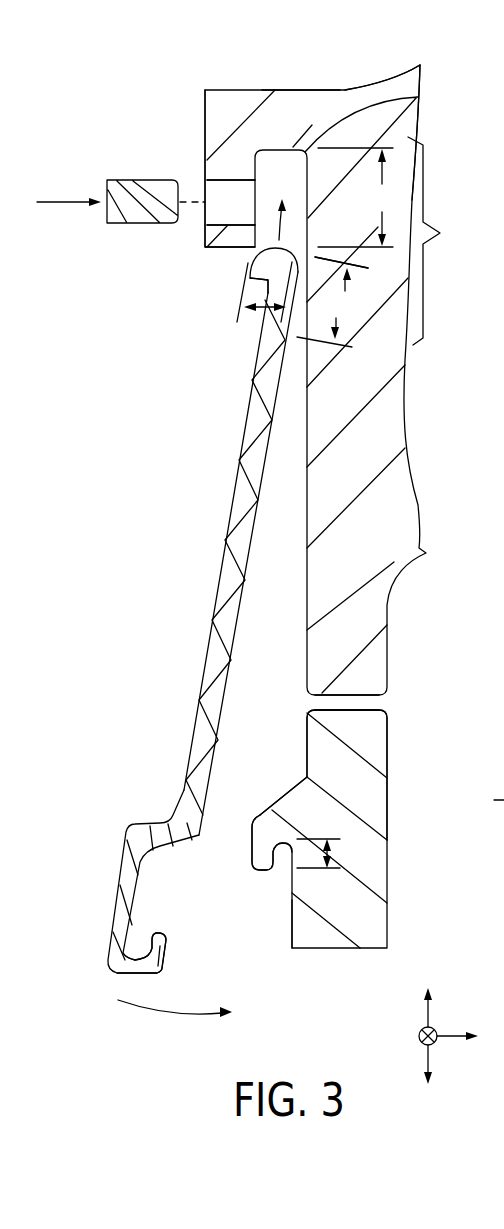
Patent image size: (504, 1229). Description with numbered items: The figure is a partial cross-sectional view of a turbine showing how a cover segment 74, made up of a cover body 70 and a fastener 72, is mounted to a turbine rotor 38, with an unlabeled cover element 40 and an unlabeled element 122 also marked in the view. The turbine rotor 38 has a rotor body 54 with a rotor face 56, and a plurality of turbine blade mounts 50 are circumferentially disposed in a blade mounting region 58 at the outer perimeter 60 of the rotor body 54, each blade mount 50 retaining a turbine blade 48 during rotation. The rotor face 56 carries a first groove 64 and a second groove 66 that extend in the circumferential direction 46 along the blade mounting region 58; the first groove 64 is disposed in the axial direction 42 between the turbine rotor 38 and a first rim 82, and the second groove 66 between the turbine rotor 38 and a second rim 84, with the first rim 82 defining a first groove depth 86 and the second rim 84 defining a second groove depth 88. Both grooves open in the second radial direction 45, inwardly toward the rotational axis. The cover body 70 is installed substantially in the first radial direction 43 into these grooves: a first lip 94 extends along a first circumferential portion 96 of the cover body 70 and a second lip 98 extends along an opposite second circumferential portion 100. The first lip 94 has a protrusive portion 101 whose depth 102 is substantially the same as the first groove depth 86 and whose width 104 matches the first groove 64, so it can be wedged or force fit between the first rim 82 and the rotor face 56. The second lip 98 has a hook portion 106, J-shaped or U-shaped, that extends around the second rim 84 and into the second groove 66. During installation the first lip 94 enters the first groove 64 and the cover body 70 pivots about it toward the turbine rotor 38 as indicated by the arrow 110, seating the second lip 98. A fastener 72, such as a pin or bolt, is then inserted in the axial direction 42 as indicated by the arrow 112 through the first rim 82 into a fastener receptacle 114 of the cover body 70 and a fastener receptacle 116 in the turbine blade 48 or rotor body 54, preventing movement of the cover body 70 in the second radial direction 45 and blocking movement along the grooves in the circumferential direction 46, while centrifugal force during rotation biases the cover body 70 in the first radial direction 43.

The turbine rotor 38 is at (328, 938).
The lever 40 is at (196, 509).
The axial direction 42 is at (453, 1032).
The first radial direction 43 is at (422, 1010).
The second radial direction 45 is at (422, 1065).
The circumferential direction 46 is at (420, 1033).
The turbine blade 48 is at (362, 90).
The turbine blade mount 50 is at (367, 693).
The rotor body 54 is at (343, 798).
The rotor face 56 is at (292, 926).
The blade mounting region 58 is at (308, 488).
The outer perimeter 60 is at (253, 90).
The first groove 64 is at (417, 97).
The second groove 66 is at (276, 832).
The cover body 70 is at (242, 443).
The fastener 72 is at (148, 226).
The cover segment 74 is at (196, 509).
The first rim 82 is at (228, 242).
The second rim 84 is at (258, 851).
The first groove depth 86 is at (357, 197).
The second groove depth 88 is at (330, 853).
The first lip 94 is at (262, 350).
The first circumferential portion 96 is at (441, 233).
The second lip 98 is at (135, 833).
The second circumferential portion 100 is at (477, 800).
The protrusive portion 101 is at (288, 252).
The depth 102 is at (332, 302).
The width 104 is at (262, 327).
The hook portion 106 is at (123, 973).
The arrow 110 is at (157, 1007).
The arrow 112 is at (62, 201).
The fastener receptacle 114 is at (242, 296).
The fastener receptacle 116 is at (230, 180).
The top wall 122 is at (322, 121).